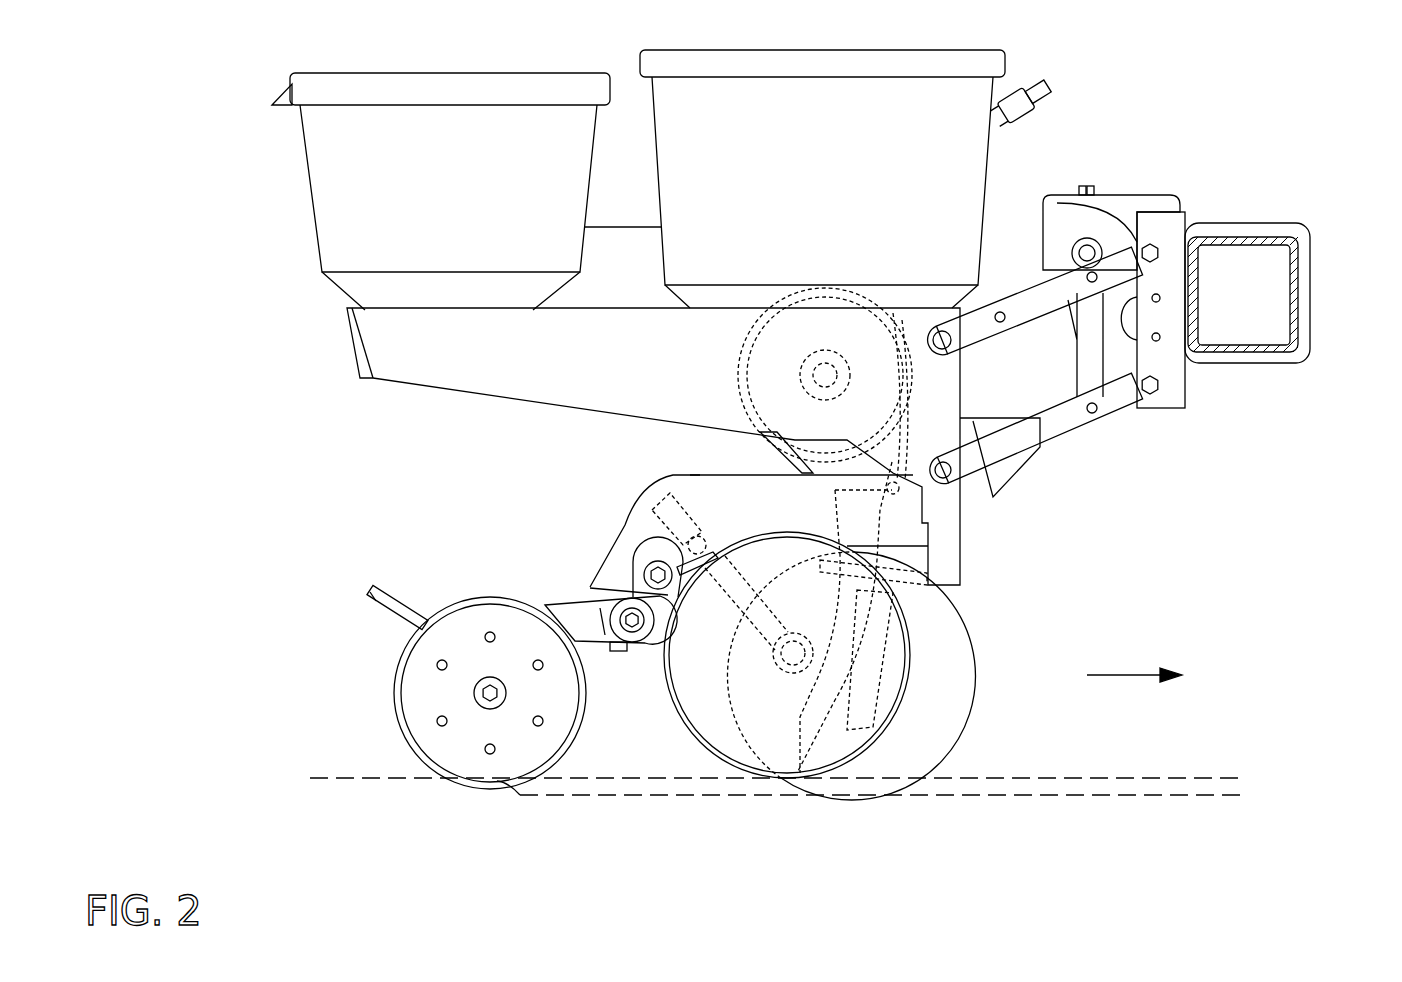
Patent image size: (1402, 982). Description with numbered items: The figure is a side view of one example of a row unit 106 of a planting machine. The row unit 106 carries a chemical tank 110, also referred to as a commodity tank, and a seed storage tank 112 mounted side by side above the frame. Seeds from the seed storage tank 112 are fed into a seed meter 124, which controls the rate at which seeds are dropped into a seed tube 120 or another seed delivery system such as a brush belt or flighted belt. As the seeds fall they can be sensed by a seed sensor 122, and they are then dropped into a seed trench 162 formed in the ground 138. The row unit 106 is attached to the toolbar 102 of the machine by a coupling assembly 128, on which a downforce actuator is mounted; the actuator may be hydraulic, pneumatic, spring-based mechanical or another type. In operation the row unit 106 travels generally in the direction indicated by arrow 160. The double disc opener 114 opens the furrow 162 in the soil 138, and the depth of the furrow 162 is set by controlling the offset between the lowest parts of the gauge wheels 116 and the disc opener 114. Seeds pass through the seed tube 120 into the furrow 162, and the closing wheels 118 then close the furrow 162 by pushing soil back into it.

The row unit 106 is at (1264, 109).
The chemical tank 110 is at (459, 199).
The seed storage tank 112 is at (842, 143).
The seed meter 124 is at (897, 328).
The toolbar 102 is at (1040, 350).
The coupling assembly 128 is at (1187, 378).
The seed sensor 122 is at (903, 600).
The seed tube 120 is at (880, 633).
The arrow 160 is at (1123, 676).
The ground 138 is at (347, 775).
The closing wheels 118 is at (433, 768).
The seed trench 162 is at (603, 790).
The gauge wheels 116 is at (727, 767).
The disc openers 114 is at (952, 747).